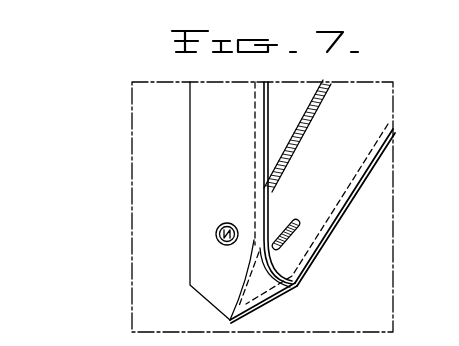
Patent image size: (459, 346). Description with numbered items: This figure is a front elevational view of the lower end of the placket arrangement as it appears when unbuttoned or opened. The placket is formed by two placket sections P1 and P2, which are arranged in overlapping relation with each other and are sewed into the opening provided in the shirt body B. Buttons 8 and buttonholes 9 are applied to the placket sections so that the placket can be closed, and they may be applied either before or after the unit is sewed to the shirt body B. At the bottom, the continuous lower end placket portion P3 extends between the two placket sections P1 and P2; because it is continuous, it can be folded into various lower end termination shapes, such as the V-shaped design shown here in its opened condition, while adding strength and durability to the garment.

The shirt body B is at (153, 112).
The placket section P1 is at (210, 185).
The placket section P2 is at (320, 192).
The lower end placket portion P3 is at (300, 303).
The buttons 8 is at (216, 236).
The buttonholes 9 is at (288, 239).